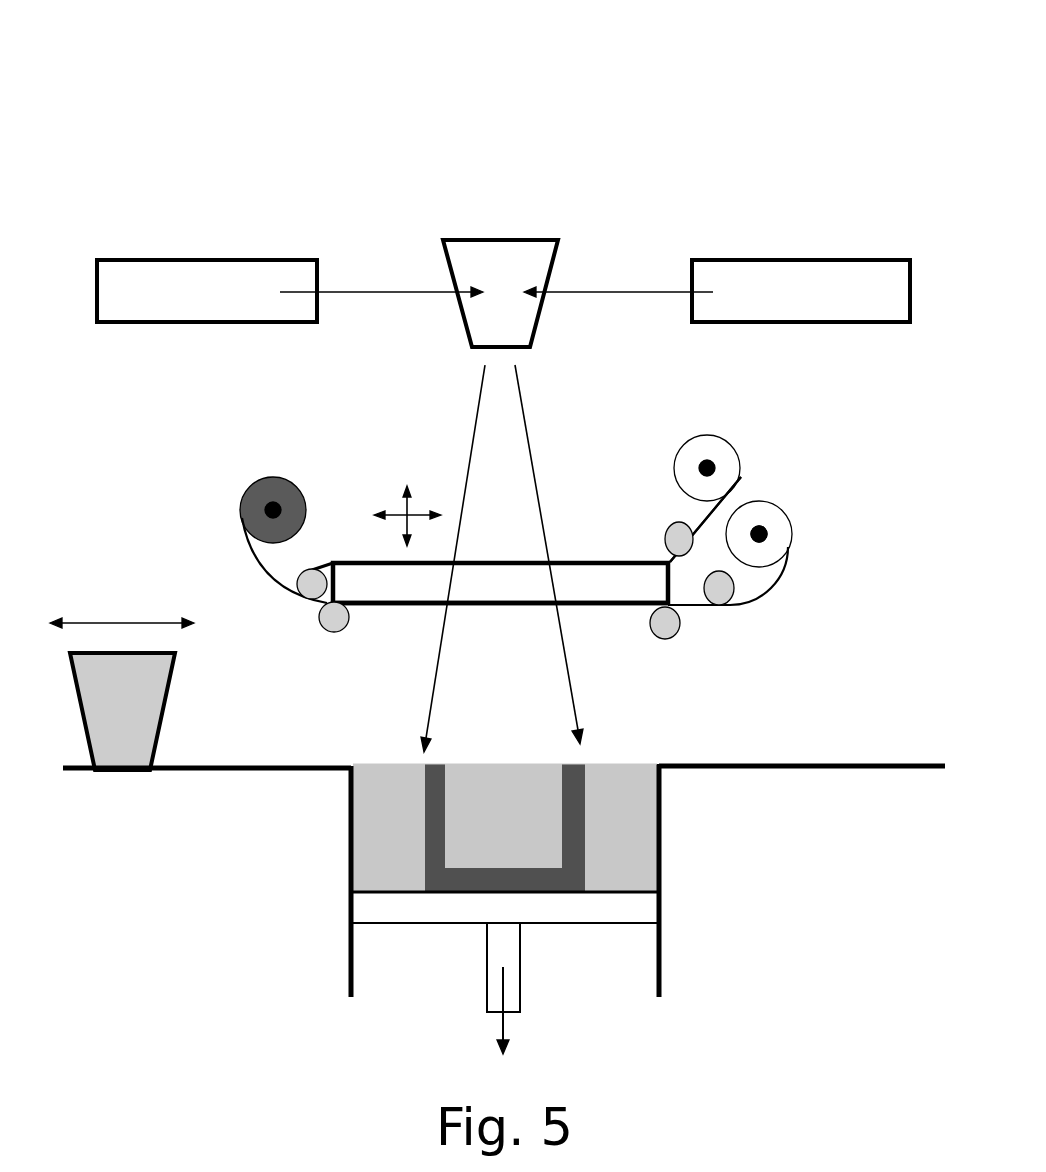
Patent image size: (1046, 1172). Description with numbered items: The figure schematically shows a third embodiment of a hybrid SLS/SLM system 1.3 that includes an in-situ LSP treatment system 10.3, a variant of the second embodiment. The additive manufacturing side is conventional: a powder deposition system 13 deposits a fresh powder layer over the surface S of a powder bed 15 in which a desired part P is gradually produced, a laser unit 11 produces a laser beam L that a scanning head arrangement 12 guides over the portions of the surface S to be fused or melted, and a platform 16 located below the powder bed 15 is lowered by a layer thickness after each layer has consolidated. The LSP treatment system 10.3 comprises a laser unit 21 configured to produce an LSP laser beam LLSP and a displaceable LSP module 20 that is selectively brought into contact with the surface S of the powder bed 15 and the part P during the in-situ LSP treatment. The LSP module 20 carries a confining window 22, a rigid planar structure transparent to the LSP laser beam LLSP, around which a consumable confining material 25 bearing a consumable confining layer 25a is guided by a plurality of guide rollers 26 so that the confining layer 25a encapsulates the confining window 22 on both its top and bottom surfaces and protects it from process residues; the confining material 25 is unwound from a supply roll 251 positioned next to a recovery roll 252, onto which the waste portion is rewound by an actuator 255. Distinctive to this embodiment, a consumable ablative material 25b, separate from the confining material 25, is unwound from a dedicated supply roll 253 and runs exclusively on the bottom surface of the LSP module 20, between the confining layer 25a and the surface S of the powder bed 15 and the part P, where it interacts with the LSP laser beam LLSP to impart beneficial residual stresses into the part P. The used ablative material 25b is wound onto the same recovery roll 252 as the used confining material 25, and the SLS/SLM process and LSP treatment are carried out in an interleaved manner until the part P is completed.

The hybrid SLS/SLM system 1.3 is at (214, 160).
The in-situ LSP treatment system 10.3 is at (681, 198).
The laser unit 11 is at (124, 272).
The scanning head arrangement 12 is at (527, 254).
The laser unit 21 is at (872, 272).
The laser beam L is at (386, 292).
The LSP laser beam LLSP is at (614, 292).
The LSP module 20 is at (573, 540).
The confining window 22 is at (593, 600).
The consumable confining material 25 is at (740, 445).
The supply roll 251 is at (692, 452).
The recovery roll 252 is at (782, 528).
The supply roll 253 is at (246, 494).
The actuator 255 is at (760, 522).
The consumable confining layer 25a is at (712, 522).
The consumable ablative material 25b is at (262, 570).
The guide rollers 26 is at (325, 628).
The powder deposition system 13 is at (145, 707).
The powder bed 15 is at (622, 826).
The platform 16 is at (420, 916).
The surface S is at (388, 758).
The part P is at (428, 860).